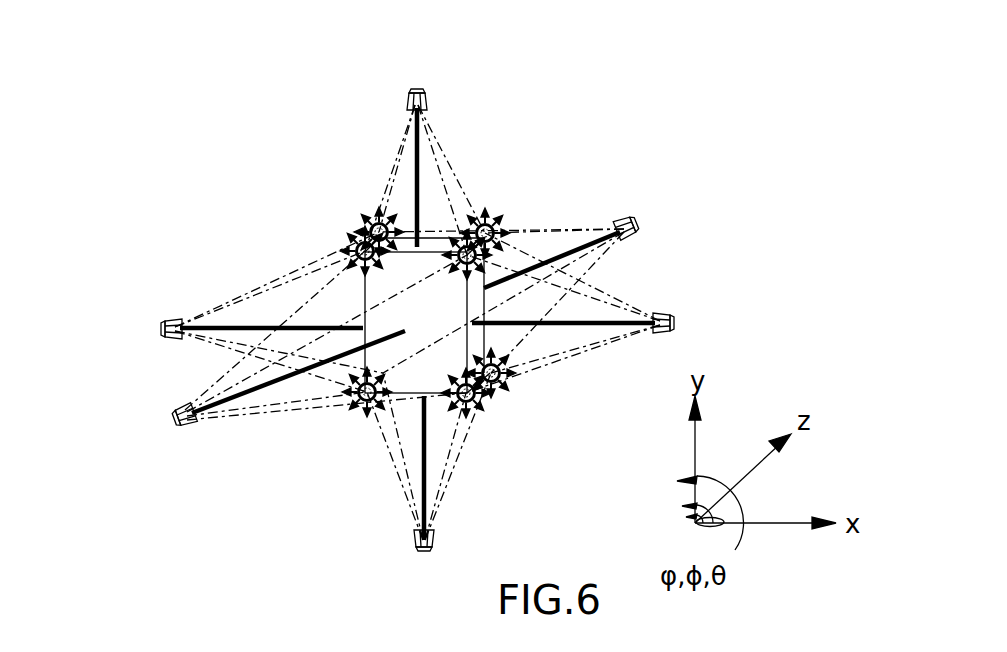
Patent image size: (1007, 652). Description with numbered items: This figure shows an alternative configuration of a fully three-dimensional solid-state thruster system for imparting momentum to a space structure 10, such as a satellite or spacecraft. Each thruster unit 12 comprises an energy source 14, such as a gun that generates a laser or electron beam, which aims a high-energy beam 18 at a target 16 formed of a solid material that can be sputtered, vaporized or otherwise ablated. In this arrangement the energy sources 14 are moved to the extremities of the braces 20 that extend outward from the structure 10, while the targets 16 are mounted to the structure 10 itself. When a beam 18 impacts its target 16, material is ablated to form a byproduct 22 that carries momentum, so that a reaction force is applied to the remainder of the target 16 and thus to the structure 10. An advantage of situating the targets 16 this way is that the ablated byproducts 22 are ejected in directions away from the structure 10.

The space structure 10 is at (487, 298).
The solid-state thruster unit 12 is at (283, 450).
The energy source 14 is at (428, 100).
The target 16 is at (352, 242).
The high-energy beam 18 is at (240, 295).
The brace 20 is at (415, 182).
The byproduct 22 is at (378, 222).